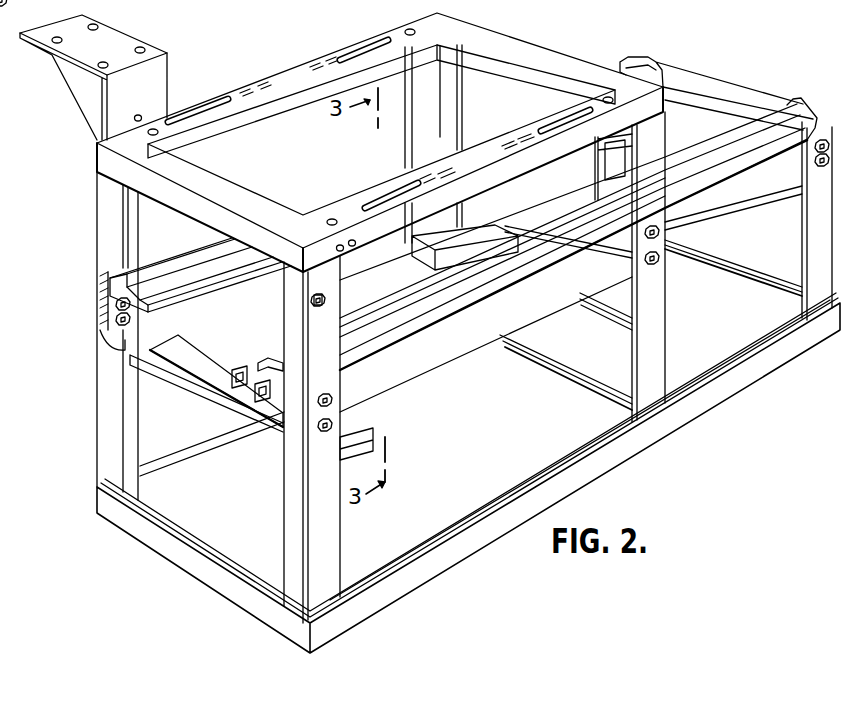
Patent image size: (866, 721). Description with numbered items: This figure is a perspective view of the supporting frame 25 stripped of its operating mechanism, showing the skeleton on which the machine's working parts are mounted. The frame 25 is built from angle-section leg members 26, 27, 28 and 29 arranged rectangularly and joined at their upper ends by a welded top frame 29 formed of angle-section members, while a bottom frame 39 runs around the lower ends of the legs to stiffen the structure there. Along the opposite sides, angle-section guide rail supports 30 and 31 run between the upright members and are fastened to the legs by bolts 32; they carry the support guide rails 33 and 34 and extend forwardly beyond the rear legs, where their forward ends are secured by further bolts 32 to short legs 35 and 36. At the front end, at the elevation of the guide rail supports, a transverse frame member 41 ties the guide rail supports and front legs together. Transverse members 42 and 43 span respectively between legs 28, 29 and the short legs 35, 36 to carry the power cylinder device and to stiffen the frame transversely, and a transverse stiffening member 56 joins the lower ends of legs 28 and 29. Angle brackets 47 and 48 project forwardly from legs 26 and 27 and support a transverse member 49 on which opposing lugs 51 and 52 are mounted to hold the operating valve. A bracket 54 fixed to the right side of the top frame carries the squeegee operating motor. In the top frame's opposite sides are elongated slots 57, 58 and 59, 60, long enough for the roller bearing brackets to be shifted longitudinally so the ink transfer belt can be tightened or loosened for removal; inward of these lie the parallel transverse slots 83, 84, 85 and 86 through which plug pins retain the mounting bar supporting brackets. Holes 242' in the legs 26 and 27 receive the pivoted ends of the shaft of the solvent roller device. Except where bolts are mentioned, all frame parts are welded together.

The frame 25 is at (584, 486).
The leg member 26 is at (105, 380).
The leg member 27 is at (331, 549).
The leg member 28 is at (458, 96).
The leg member / top frame 29 is at (540, 53).
The guide rail support 30 is at (218, 282).
The guide rail support 31 is at (430, 363).
The bolt 32 is at (115, 319).
The support guide rail 33 is at (170, 268).
The support guide rail 34 is at (385, 306).
The short leg 35 is at (606, 172).
The short leg 36 is at (826, 216).
The bottom frame 39 is at (512, 498).
The transverse frame member 41 is at (727, 100).
The transverse member 42 is at (600, 297).
The transverse member 43 is at (780, 206).
The angle bracket 47 is at (150, 365).
The angle bracket 48 is at (348, 458).
The transverse member 49 is at (212, 366).
The lug 51 is at (239, 369).
The lug 52 is at (244, 400).
The bracket 54 is at (163, 80).
The transverse stiffening member 56 is at (545, 372).
The elongated slot 57 is at (207, 108).
The elongated slot 58 is at (362, 46).
The elongated slot 59 is at (372, 195).
The elongated slot 60 is at (555, 118).
The transverse slot 83 is at (263, 88).
The transverse slot 84 is at (451, 175).
The transverse slot 85 is at (326, 62).
The transverse slot 86 is at (532, 138).
The hole 242' is at (278, 300).